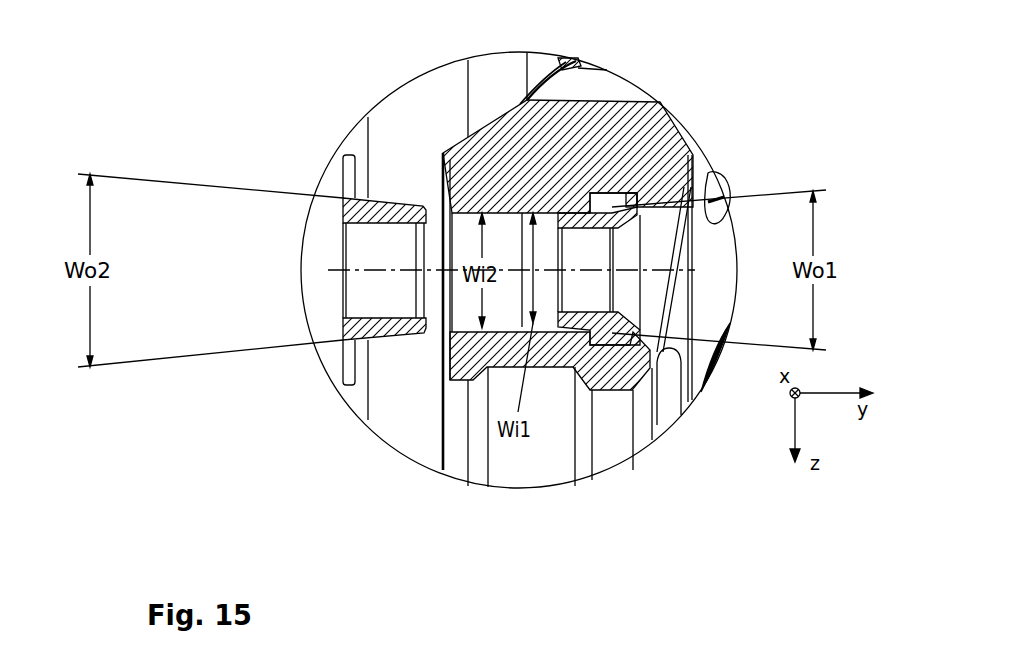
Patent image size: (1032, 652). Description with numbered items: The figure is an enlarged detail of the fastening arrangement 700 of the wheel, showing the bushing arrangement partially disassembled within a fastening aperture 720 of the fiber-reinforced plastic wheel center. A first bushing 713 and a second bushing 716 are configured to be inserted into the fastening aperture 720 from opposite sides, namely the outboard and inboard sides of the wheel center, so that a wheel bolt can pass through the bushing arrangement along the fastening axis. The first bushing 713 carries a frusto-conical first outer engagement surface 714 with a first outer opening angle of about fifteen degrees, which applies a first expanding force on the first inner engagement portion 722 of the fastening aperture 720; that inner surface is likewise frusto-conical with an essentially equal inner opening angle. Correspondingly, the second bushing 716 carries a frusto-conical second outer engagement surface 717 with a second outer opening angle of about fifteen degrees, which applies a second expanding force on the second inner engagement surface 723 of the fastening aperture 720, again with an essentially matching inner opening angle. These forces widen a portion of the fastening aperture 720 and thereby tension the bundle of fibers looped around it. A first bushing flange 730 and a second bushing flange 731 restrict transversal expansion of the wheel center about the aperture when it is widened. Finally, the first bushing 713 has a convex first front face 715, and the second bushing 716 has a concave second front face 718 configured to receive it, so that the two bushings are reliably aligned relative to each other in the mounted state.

The fastening arrangement 700 is at (395, 245).
The second bushing flange 731 is at (251, 193).
The second front face 718 is at (334, 211).
The second inner engagement surface 723 is at (430, 167).
The first front face 715 is at (521, 107).
The first bushing flange 730 is at (742, 107).
The first bushing 713 is at (751, 166).
The second bushing 716 is at (239, 445).
The second outer engagement surface 717 is at (333, 397).
The fastening aperture 720 is at (543, 312).
The first inner engagement portion 722 is at (611, 363).
The first outer engagement surface 714 is at (671, 372).